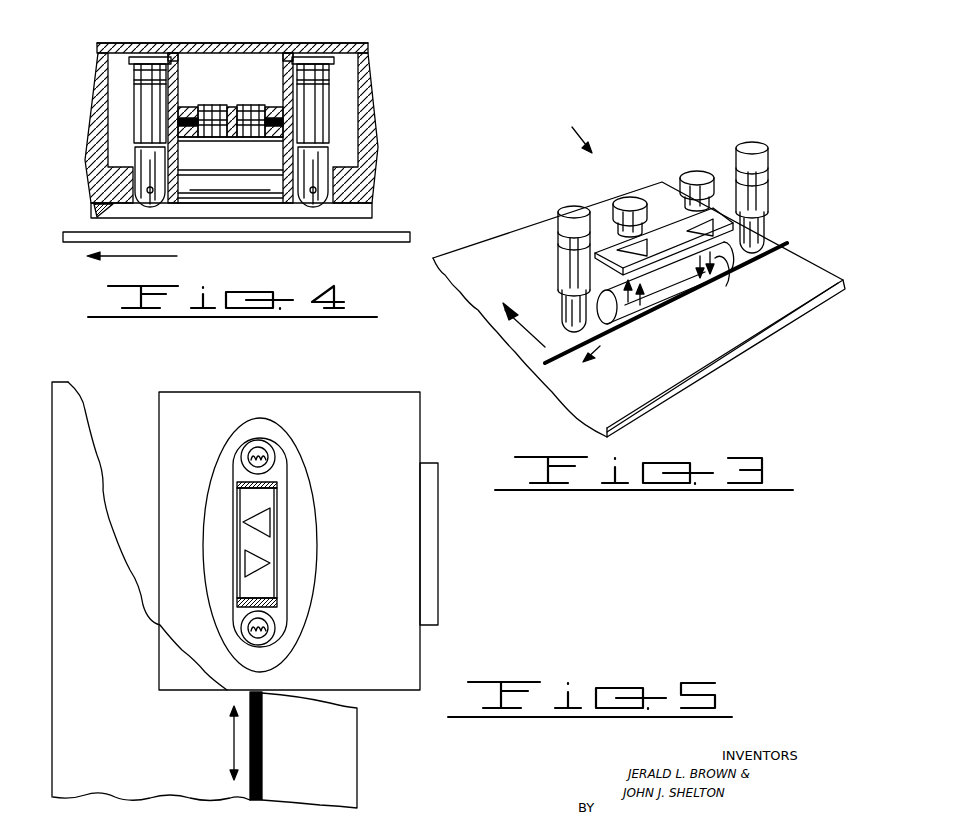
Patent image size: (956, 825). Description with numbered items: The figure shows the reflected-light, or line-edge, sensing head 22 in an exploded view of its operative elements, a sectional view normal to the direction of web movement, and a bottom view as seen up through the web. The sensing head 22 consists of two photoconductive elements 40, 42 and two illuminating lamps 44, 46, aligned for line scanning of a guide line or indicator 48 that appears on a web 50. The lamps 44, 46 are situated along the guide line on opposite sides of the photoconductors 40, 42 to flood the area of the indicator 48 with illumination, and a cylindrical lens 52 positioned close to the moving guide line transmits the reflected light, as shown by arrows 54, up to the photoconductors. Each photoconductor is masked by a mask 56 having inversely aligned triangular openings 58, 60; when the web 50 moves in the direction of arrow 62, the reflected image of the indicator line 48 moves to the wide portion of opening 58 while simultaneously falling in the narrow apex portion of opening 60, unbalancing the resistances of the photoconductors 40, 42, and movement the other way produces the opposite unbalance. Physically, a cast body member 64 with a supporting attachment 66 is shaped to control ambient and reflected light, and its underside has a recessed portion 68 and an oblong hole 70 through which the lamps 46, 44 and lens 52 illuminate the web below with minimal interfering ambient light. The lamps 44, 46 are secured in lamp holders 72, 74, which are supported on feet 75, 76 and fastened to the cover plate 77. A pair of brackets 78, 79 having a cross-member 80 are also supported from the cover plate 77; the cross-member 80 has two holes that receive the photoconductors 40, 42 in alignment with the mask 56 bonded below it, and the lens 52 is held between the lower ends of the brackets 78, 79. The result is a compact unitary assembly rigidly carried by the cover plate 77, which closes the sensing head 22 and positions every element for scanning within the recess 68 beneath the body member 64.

In FIG. 3, the sensing head 22 is at (570, 135).
In FIG. 4, the photoconductive element 40 is at (210, 105).
In FIG. 3, the photoconductive element 40 is at (696, 172).
In FIG. 4, the photoconductive element 42 is at (250, 105).
In FIG. 3, the photoconductive element 42 is at (629, 198).
In FIG. 4, the illuminating lamp 44 is at (156, 205).
In FIG. 3, the illuminating lamp 44 is at (766, 226).
In FIG. 5, the illuminating lamp 44 is at (245, 447).
In FIG. 4, the illuminating lamp 46 is at (306, 204).
In FIG. 3, the illuminating lamp 46 is at (562, 308).
In FIG. 5, the illuminating lamp 46 is at (270, 638).
In FIG. 3, the guide line 48 is at (568, 358).
In FIG. 5, the guide line 48 is at (263, 752).
In FIG. 3, the web 50 is at (700, 365).
In FIG. 5, the web 50 is at (362, 745).
In FIG. 4, the cylindrical lens 52 is at (255, 190).
In FIG. 3, the cylindrical lens 52 is at (662, 305).
In FIG. 3, the arrows 54 is at (705, 283).
In FIG. 4, the mask 56 is at (232, 145).
In FIG. 3, the mask 56 is at (600, 263).
In FIG. 5, the mask 56 is at (267, 586).
In FIG. 3, the triangular opening 58 is at (695, 222).
In FIG. 5, the triangular opening 58 is at (263, 524).
In FIG. 3, the triangular opening 60 is at (648, 245).
In FIG. 5, the triangular opening 60 is at (262, 565).
In FIG. 3, the arrow 62 is at (510, 338).
In FIG. 4, the cast body member 64 is at (374, 150).
In FIG. 5, the cast body member 64 is at (398, 403).
In FIG. 5, the supporting attachment 66 is at (436, 594).
In FIG. 4, the recessed portion 68 is at (103, 210).
In FIG. 5, the recessed portion 68 is at (295, 606).
In FIG. 4, the oblong hole 70 is at (330, 200).
In FIG. 5, the oblong hole 70 is at (278, 440).
In FIG. 4, the lamp holder 72 is at (145, 95).
In FIG. 4, the lamp holder 74 is at (323, 117).
In FIG. 4, the foot 75 is at (138, 68).
In FIG. 4, the foot 76 is at (320, 72).
In FIG. 4, the cover plate 77 is at (137, 43).
In FIG. 4, the bracket 78 is at (173, 43).
In FIG. 5, the bracket 78 is at (237, 484).
In FIG. 4, the bracket 79 is at (293, 43).
In FIG. 5, the bracket 79 is at (237, 602).
In FIG. 4, the cross-member 80 is at (232, 107).